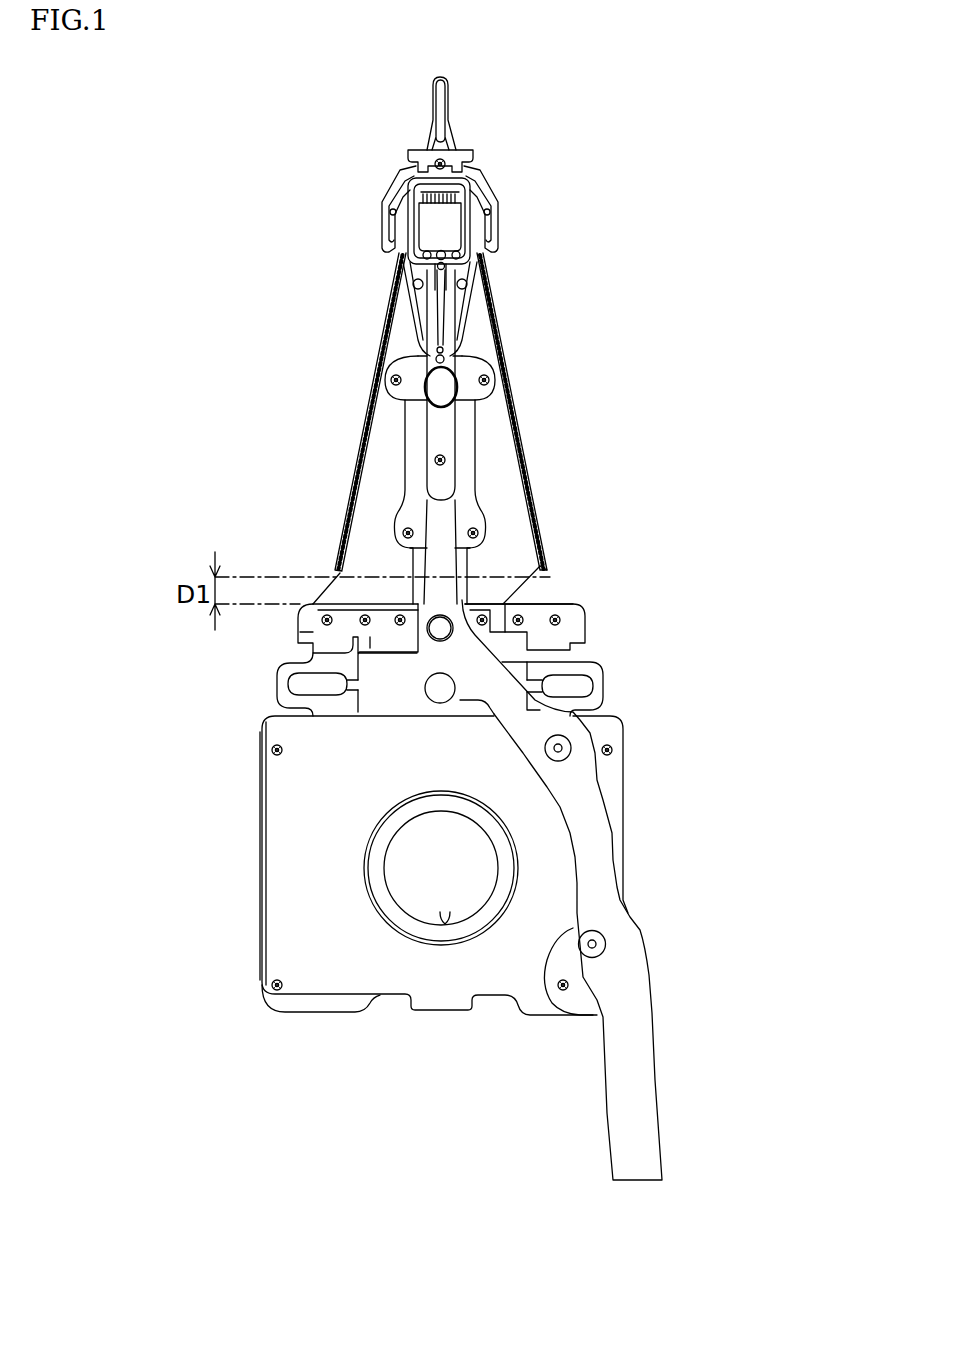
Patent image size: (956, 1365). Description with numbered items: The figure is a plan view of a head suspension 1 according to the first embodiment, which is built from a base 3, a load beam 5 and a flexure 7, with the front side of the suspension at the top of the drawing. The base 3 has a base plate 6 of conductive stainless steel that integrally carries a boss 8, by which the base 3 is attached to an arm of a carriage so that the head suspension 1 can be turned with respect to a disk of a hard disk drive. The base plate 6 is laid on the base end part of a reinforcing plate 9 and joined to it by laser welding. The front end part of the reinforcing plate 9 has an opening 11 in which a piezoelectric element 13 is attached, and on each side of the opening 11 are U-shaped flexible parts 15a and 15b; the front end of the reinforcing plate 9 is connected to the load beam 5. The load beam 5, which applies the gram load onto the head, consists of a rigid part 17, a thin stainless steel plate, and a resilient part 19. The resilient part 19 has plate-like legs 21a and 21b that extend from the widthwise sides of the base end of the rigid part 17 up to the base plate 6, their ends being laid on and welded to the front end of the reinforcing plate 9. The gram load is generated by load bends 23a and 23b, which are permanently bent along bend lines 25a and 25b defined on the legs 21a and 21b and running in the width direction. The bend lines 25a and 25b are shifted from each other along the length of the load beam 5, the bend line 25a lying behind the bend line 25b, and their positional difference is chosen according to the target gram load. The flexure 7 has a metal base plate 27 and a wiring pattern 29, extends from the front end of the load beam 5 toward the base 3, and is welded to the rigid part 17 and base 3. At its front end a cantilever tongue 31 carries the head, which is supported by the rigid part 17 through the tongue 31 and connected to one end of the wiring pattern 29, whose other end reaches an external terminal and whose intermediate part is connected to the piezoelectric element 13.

The head suspension 1 is at (598, 122).
The base 3 is at (262, 819).
The load beam 5 is at (533, 488).
The base plate 6 is at (282, 1004).
The flexure 7 is at (482, 428).
The boss 8 is at (445, 924).
The reinforcing plate 9 is at (282, 944).
The opening 11 is at (365, 703).
The piezoelectric element 13 is at (517, 667).
The U-shaped flexible part 15a is at (283, 686).
The U-shaped flexible part 15b is at (602, 682).
The rigid part 17 is at (367, 416).
The resilient part 19 is at (573, 603).
The leg 21a is at (318, 645).
The leg 21b is at (575, 622).
The load bend 23a is at (313, 600).
The load bend 23b is at (541, 570).
The bend line 25a is at (315, 631).
The bend line 25b is at (513, 573).
The metal base plate 27 is at (471, 365).
The wiring pattern 29 is at (454, 310).
The cantilever tongue 31 is at (453, 229).